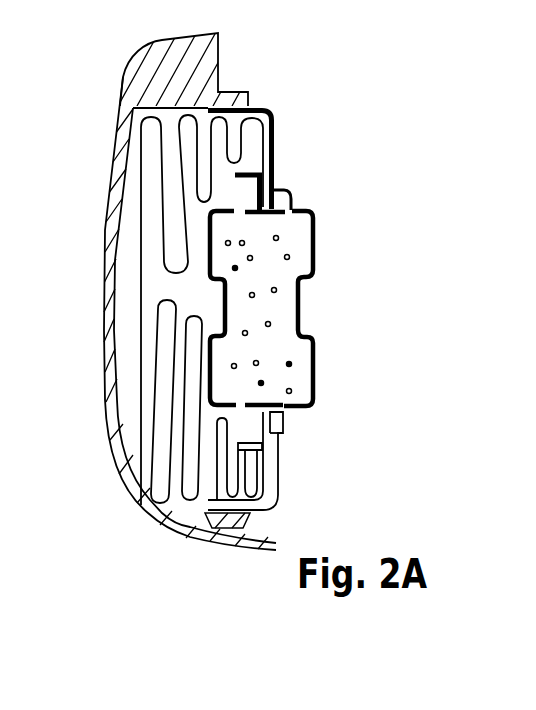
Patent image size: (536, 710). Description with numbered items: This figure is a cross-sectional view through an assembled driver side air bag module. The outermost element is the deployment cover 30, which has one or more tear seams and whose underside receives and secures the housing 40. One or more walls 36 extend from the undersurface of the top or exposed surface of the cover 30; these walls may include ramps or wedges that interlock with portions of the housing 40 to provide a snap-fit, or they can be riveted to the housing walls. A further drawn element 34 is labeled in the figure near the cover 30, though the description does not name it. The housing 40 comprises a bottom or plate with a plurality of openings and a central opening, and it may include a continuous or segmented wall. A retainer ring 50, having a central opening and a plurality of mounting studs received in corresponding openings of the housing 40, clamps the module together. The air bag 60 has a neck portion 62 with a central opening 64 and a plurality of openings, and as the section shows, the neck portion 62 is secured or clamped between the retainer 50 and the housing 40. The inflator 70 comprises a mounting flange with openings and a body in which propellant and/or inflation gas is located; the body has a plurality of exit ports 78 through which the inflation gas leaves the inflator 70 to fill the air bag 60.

The deployment cover 30 is at (239, 563).
The fins 34 is at (183, 495).
The walls 36 is at (250, 511).
The housing 40 is at (275, 135).
The retainer 50 is at (272, 186).
The air bag 60 is at (138, 197).
The neck portion 62 is at (278, 462).
The central opening 64 is at (315, 233).
The inflator 70 is at (312, 393).
The exit ports 78 is at (240, 218).